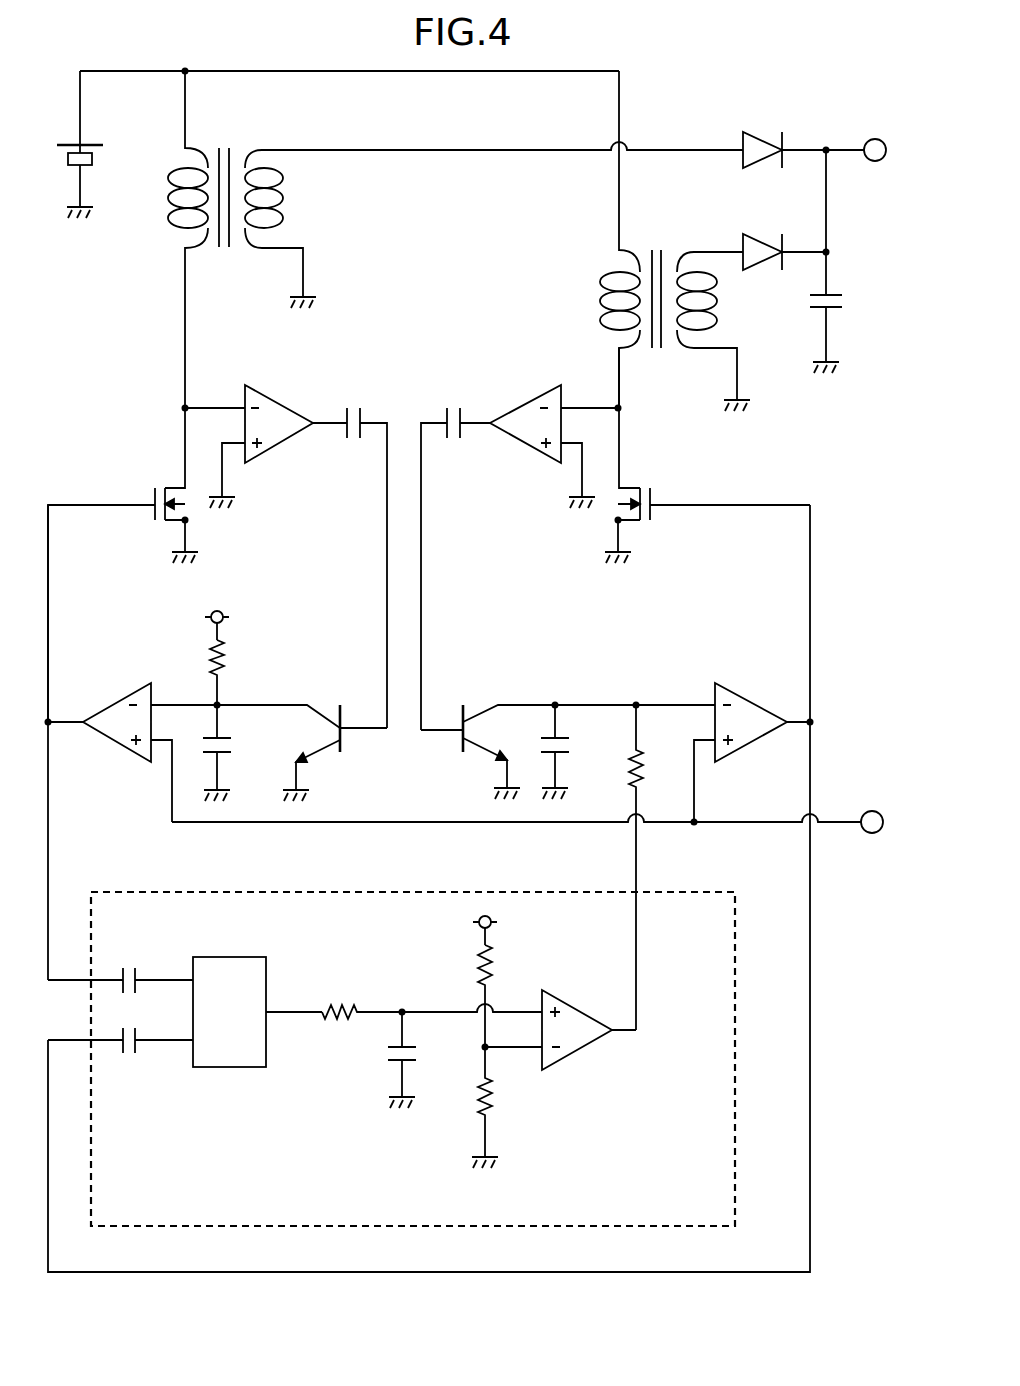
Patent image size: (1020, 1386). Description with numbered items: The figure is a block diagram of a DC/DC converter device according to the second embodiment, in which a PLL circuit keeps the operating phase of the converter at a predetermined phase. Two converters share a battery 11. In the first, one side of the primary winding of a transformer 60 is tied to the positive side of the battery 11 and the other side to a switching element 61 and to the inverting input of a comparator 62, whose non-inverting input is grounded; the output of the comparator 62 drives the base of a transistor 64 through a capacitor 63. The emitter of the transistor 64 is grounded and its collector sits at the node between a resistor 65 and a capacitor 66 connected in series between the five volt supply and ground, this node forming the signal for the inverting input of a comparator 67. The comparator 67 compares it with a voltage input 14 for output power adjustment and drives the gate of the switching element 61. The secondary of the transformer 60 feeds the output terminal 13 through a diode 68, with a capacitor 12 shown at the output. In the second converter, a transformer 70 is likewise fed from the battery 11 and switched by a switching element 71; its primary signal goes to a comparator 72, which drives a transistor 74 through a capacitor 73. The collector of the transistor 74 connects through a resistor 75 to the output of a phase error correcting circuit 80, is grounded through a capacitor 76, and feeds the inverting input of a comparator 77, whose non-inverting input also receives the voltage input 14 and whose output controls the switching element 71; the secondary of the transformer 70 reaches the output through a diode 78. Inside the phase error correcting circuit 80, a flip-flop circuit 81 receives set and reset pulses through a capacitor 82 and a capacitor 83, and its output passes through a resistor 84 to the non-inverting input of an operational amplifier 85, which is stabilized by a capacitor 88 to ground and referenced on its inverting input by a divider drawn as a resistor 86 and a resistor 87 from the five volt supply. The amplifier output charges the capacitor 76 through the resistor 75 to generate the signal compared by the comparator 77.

The battery 11 is at (104, 156).
The smoothing capacitor 12 is at (845, 302).
The output terminal 13 is at (877, 134).
The voltage input 14 is at (875, 808).
The transformer 60 is at (225, 136).
The switching element 61 is at (149, 493).
The comparator 62 is at (271, 389).
The capacitor 63 is at (351, 396).
The transistor 64 is at (330, 705).
The resistor 65 is at (232, 660).
The capacitor 66 is at (235, 746).
The comparator 67 is at (118, 699).
The diode 68 is at (766, 128).
The transformer 70 is at (657, 238).
The switching element 71 is at (653, 489).
The comparator 72 is at (532, 388).
The capacitor 73 is at (456, 394).
The transistor 74 is at (478, 705).
The resistor 75 is at (650, 763).
The capacitor 76 is at (577, 748).
The comparator 77 is at (750, 698).
The diode 78 is at (766, 228).
The phase error correcting circuit 80 is at (740, 1178).
The flip-flop circuit 81 is at (247, 956).
The capacitor 82 is at (130, 960).
The capacitor 83 is at (129, 1058).
The resistor 84 is at (342, 999).
The operational amplifier 85 is at (583, 1009).
The resistor 86 is at (503, 958).
The resistor 87 is at (503, 1091).
The capacitor 88 is at (424, 1052).